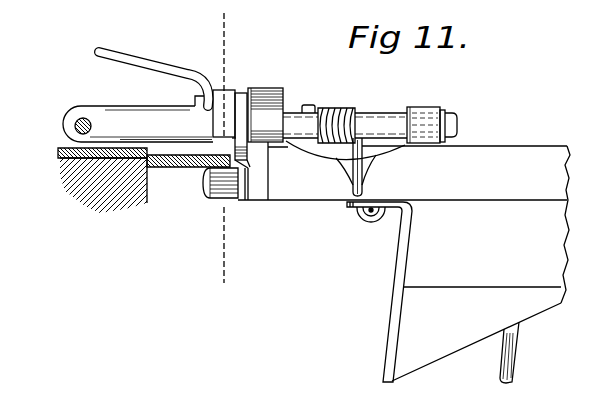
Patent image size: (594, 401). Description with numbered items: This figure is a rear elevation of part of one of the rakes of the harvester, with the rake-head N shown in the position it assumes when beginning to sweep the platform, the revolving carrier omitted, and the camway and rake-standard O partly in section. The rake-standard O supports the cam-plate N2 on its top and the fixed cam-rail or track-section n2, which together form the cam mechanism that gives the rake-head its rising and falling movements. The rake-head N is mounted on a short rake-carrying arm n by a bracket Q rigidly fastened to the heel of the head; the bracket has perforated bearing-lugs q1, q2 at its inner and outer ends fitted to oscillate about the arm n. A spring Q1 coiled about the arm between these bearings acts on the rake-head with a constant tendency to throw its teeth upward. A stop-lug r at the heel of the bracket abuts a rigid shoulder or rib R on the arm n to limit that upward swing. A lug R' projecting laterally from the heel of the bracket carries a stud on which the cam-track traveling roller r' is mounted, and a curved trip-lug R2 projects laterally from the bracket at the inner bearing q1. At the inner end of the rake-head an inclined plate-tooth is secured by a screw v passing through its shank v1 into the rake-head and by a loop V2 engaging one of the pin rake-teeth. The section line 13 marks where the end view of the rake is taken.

The section line 13 is at (224, 150).
The rake-head N is at (404, 224).
The cam-plate N2 is at (58, 149).
The rake-carrying arm n is at (188, 126).
The cam-track section n2 is at (160, 171).
The rake-standard O is at (103, 187).
The shoulder R is at (169, 94).
The lug R' is at (238, 159).
The trip-lug R2 is at (269, 92).
The stop-lug r is at (221, 144).
The cam-track traveling roller r' is at (219, 193).
The bracket Q is at (251, 193).
The spring Q1 is at (337, 110).
The inner bearing-lug q1 is at (267, 128).
The outer bearing-lug q2 is at (420, 108).
The screw v is at (362, 217).
The shank v1 is at (400, 212).
The loop V2 is at (476, 335).